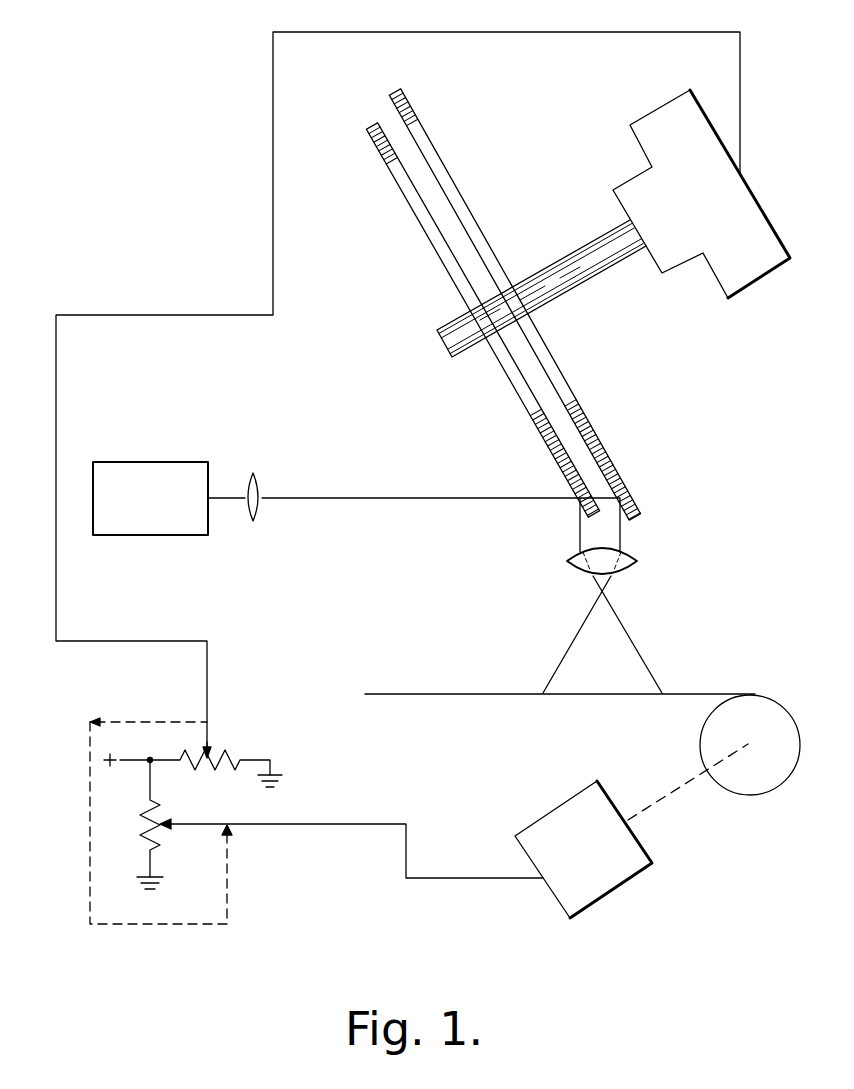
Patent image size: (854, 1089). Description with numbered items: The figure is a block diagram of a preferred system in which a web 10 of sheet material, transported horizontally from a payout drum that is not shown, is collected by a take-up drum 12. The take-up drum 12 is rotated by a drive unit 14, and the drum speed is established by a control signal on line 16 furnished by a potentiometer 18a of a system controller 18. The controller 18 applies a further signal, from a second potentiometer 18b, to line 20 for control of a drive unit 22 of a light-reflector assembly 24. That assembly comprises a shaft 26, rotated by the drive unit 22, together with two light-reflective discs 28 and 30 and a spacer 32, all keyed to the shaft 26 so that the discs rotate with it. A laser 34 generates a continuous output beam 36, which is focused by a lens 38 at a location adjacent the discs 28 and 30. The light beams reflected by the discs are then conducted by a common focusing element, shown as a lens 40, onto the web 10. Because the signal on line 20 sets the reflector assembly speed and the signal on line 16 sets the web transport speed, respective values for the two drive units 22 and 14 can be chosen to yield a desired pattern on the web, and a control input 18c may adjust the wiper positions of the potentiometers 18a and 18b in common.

The web 10 is at (447, 693).
The take-up drum 12 is at (740, 795).
The drive unit 14 is at (560, 803).
The line 16 is at (472, 878).
The system controller 18 is at (201, 807).
The potentiometer 18a is at (155, 836).
The potentiometer 18b is at (213, 762).
The control input 18c is at (227, 905).
The line 20 is at (145, 315).
The drive unit 22 is at (745, 275).
The light-reflector assembly 24 is at (536, 190).
The shaft 26 is at (575, 277).
The light-reflective disc 28 is at (411, 202).
The light-reflective disc 30 is at (593, 428).
The spacer 32 is at (480, 294).
The laser 34 is at (142, 462).
The output beam 36 is at (418, 498).
The lens 38 is at (257, 476).
The lens 40 is at (632, 557).